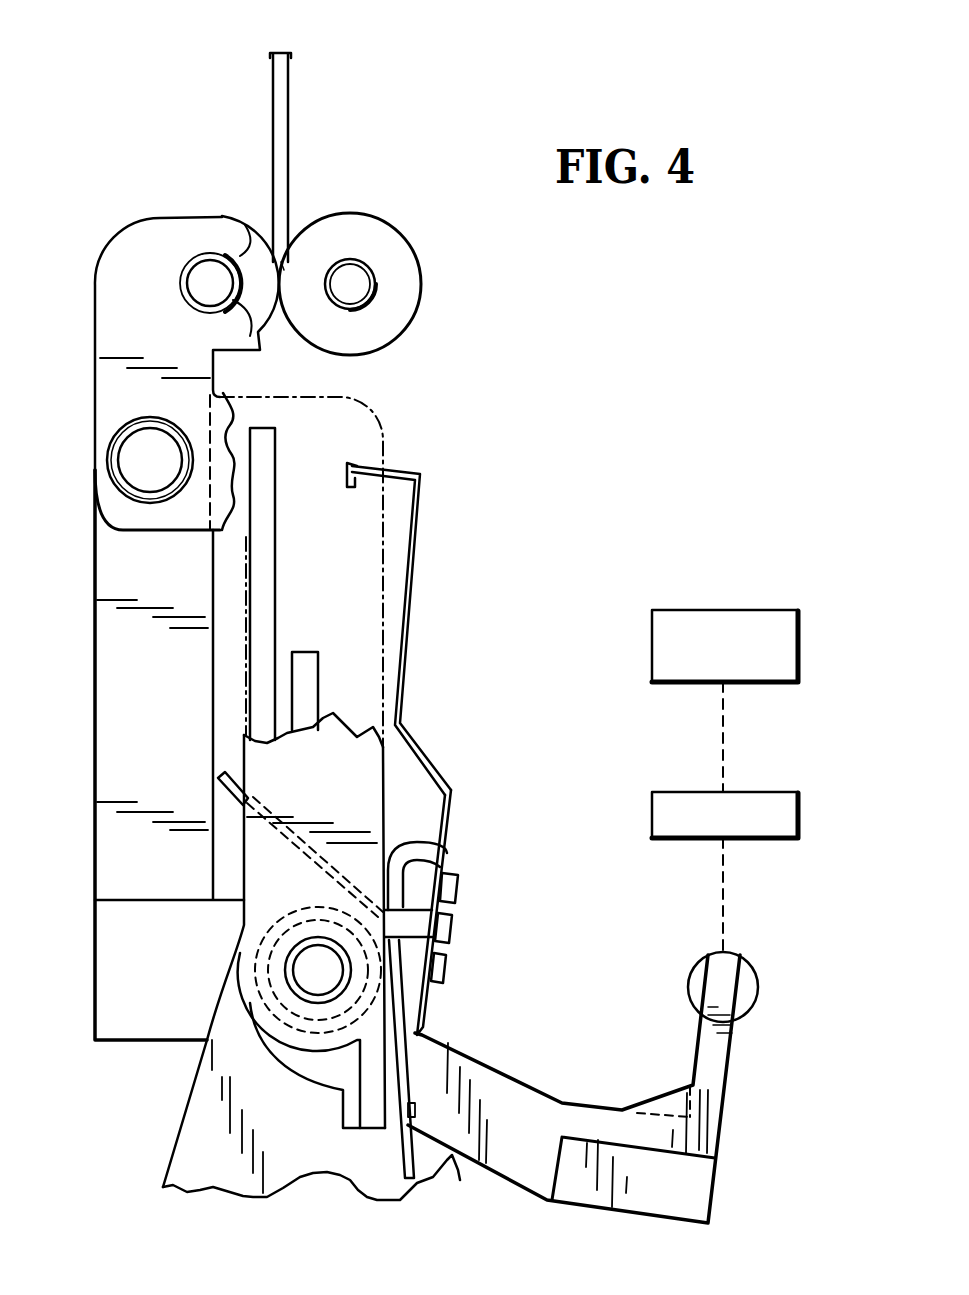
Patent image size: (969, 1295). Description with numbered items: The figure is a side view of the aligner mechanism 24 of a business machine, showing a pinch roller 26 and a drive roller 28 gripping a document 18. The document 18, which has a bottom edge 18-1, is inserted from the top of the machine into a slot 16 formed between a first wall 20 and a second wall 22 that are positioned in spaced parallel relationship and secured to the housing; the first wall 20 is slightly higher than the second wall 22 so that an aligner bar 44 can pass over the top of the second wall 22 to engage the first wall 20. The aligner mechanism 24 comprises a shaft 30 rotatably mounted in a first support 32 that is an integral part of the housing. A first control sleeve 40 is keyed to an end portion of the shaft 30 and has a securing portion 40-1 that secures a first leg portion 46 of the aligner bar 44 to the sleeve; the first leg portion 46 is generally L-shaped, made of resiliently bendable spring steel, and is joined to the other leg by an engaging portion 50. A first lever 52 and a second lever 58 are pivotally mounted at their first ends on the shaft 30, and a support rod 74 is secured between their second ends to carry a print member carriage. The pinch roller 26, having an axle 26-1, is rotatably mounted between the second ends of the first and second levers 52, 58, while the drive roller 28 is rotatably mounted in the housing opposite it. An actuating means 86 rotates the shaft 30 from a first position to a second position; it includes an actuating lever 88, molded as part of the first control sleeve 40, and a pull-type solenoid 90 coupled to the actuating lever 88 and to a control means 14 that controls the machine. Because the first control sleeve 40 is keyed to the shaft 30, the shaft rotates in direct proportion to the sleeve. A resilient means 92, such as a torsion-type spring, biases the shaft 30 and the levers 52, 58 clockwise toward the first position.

The control means 14 is at (740, 610).
The slot 16 is at (288, 645).
The document 18 is at (290, 97).
The bottom edge 18-1 is at (287, 268).
The first wall 20 is at (280, 538).
The second wall 22 is at (320, 677).
The aligner mechanism 24 is at (176, 85).
The pinch roller 26 is at (265, 325).
The axle 26-1 is at (210, 272).
The drive roller 28 is at (400, 308).
The shaft 30 is at (310, 970).
The first support 32 is at (170, 1150).
The first control sleeve 40 is at (247, 920).
The securing portion 40-1 is at (447, 853).
The aligner bar 44 is at (433, 475).
The first leg portion 46 is at (443, 781).
The engaging portion 50 is at (350, 460).
The first lever 52 is at (126, 531).
The second lever 58 is at (107, 1049).
The support rod 74 is at (140, 447).
The actuating means 86 is at (773, 861).
The actuating lever 88 is at (520, 1073).
The solenoid 90 is at (770, 792).
The resilient means 92 is at (220, 775).